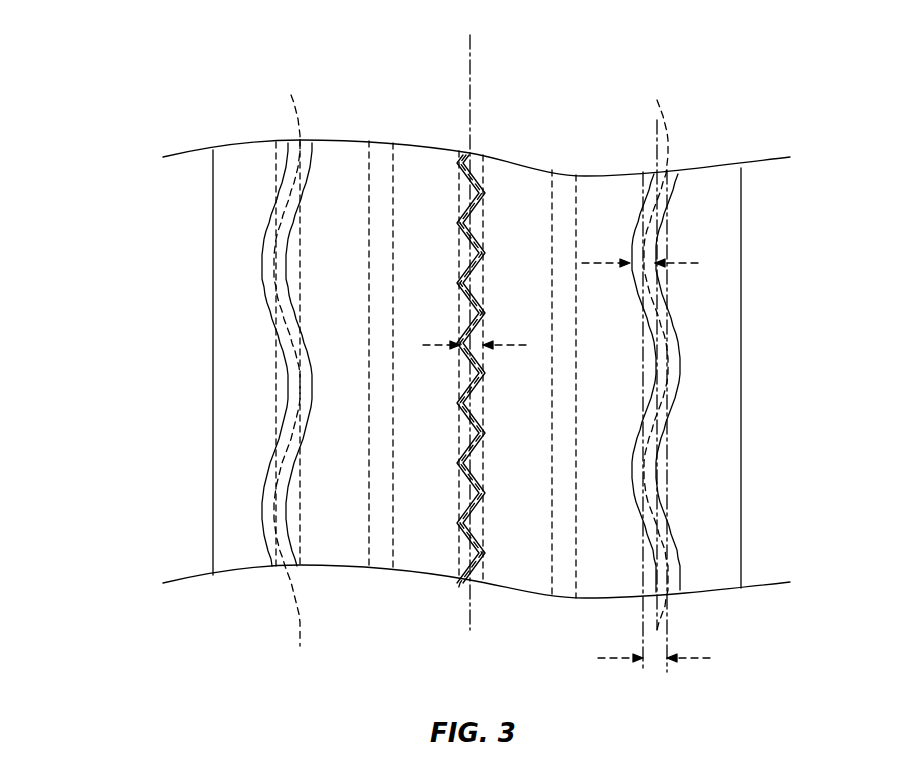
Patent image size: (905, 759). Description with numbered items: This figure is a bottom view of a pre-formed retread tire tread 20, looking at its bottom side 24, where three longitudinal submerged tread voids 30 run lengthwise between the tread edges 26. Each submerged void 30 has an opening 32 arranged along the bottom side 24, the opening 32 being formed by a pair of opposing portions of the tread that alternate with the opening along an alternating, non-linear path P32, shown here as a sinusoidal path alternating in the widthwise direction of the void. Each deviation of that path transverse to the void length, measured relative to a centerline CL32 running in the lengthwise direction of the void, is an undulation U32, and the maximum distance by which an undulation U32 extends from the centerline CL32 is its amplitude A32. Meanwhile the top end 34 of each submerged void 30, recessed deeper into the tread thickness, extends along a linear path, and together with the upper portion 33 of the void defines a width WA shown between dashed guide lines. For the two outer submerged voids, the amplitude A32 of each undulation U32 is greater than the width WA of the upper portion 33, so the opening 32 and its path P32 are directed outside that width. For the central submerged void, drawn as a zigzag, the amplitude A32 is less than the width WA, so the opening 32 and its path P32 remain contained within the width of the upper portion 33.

The pre-formed retread tire tread 20 is at (140, 94).
The bottom side 24 is at (723, 237).
The side edge 26 is at (212, 392).
The longitudinal submerged tread void 30 is at (277, 568).
The opening 32 is at (489, 343).
The upper portion 33 is at (506, 367).
The top end 34 is at (302, 482).
The alternating, non-linear path P32 is at (482, 130).
The centerline CL32 is at (472, 78).
The undulation U32 is at (465, 268).
The amplitude A32 is at (510, 345).
The width of upper portion WA is at (695, 660).